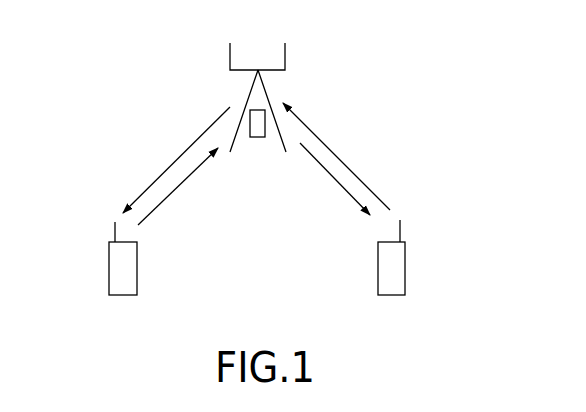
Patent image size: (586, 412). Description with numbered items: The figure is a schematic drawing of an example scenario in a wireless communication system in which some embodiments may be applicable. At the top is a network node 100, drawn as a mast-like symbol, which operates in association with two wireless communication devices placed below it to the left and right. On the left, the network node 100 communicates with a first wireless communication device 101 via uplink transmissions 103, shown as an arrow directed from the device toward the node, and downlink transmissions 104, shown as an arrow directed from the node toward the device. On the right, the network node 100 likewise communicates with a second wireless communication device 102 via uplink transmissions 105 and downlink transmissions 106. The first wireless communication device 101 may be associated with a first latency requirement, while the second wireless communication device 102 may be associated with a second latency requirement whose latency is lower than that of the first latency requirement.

The network node 100 is at (268, 104).
The first wireless communication device 101 is at (108, 270).
The second wireless communication device 102 is at (405, 269).
The uplink transmissions 103 is at (178, 187).
The downlink transmissions 104 is at (167, 170).
The uplink transmissions 105 is at (347, 162).
The downlink transmissions 106 is at (332, 178).